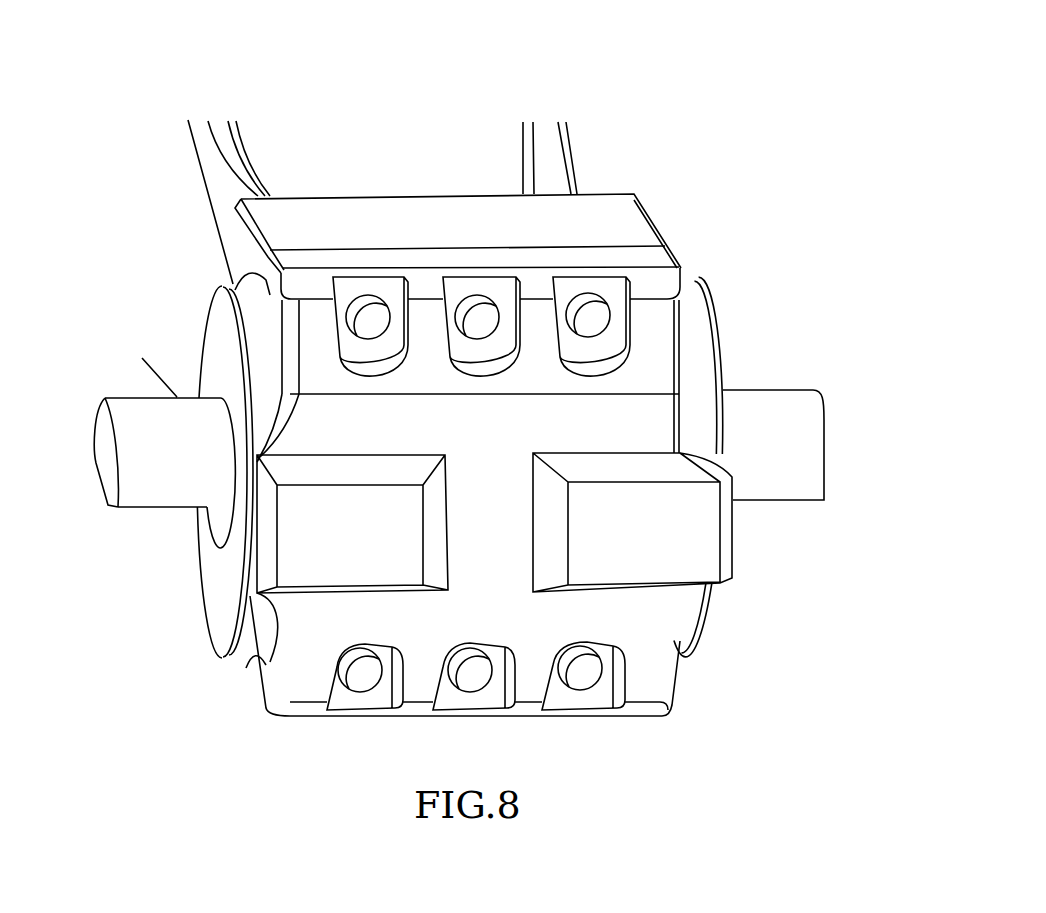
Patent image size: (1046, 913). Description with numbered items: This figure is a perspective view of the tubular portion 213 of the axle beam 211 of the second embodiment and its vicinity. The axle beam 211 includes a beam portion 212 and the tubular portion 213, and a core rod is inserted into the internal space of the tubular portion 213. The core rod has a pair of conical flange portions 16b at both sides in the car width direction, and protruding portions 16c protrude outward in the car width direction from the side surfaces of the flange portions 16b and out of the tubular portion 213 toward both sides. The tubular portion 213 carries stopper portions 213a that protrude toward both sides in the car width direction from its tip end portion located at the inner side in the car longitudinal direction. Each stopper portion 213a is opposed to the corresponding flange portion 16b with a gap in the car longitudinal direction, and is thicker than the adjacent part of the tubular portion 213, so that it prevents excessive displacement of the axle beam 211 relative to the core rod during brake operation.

The axle beam 211 is at (670, 137).
The beam portion 212 is at (187, 242).
The tubular portion 213 is at (633, 231).
The stopper portion 213a is at (723, 534).
The flange portion 16b is at (715, 322).
The protruding portion 16c is at (825, 443).